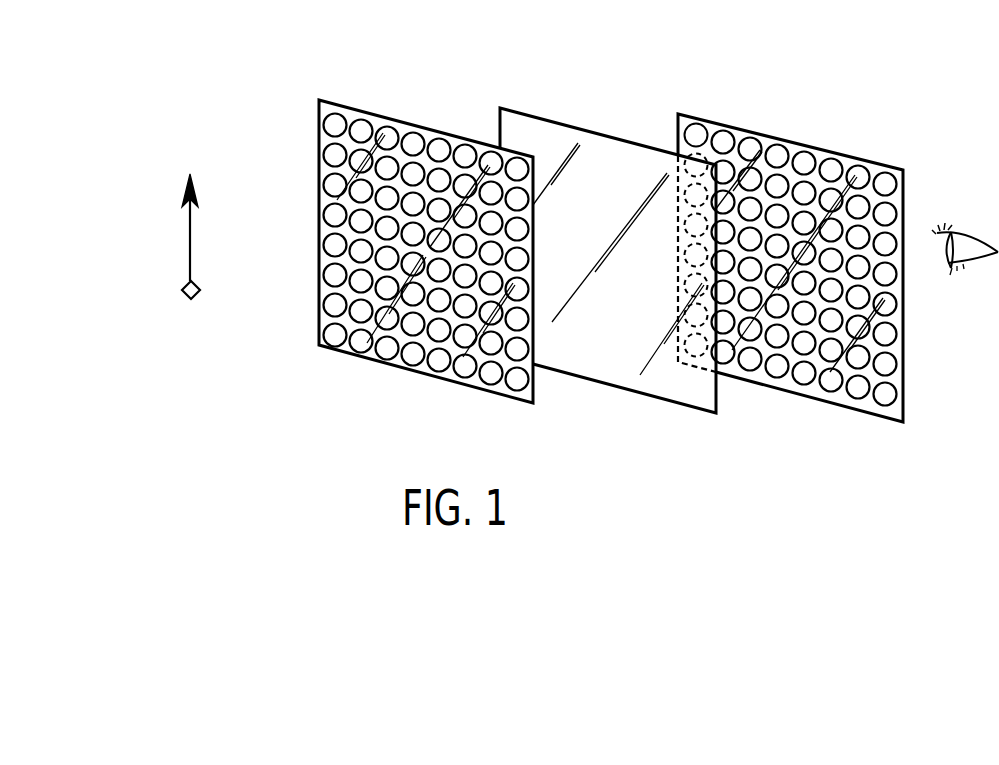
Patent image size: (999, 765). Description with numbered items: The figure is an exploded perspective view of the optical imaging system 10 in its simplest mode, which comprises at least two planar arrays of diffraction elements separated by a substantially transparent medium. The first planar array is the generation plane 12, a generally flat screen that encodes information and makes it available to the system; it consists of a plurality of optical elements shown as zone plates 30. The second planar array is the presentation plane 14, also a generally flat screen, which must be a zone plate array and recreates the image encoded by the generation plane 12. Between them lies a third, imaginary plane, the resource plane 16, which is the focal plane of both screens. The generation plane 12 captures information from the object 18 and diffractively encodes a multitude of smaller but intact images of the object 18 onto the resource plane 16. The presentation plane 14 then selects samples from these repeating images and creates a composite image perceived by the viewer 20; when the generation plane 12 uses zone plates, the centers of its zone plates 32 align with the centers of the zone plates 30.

The display system 10 is at (455, 71).
The generation plane 12 is at (352, 108).
The presentation plane 14 is at (734, 128).
The resource plane 16 is at (548, 119).
The object 18 is at (188, 248).
The viewer 20 is at (973, 238).
The zone plates 30 is at (368, 343).
The zone plates 32 is at (758, 364).